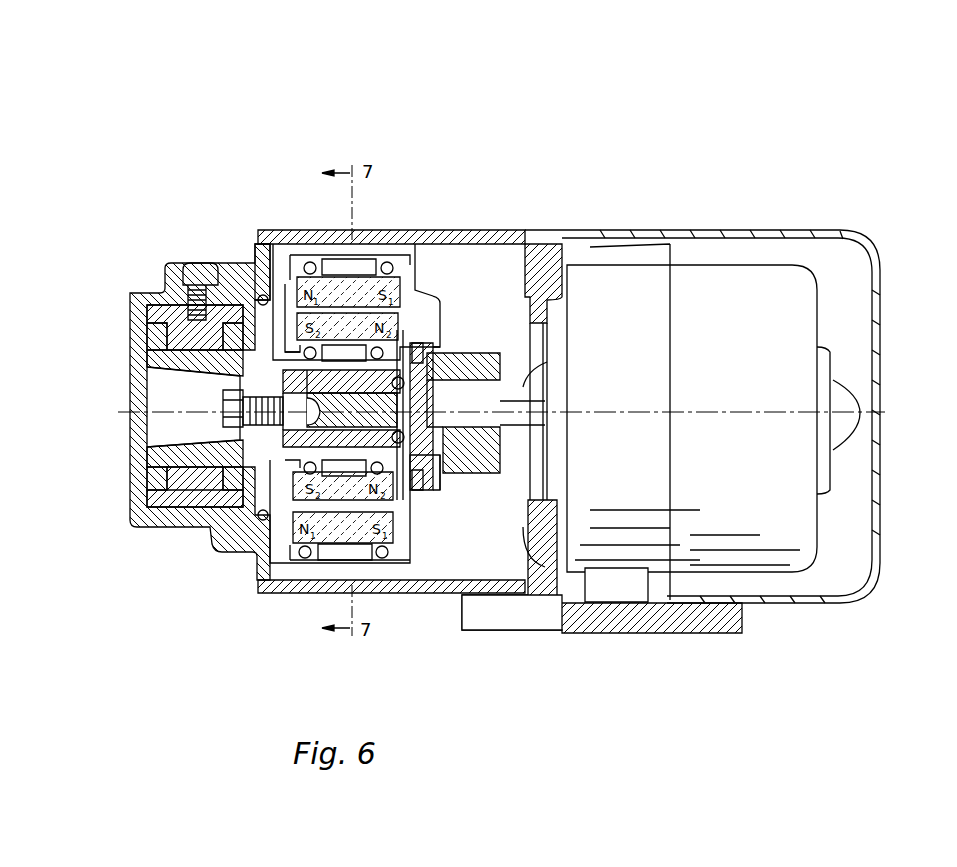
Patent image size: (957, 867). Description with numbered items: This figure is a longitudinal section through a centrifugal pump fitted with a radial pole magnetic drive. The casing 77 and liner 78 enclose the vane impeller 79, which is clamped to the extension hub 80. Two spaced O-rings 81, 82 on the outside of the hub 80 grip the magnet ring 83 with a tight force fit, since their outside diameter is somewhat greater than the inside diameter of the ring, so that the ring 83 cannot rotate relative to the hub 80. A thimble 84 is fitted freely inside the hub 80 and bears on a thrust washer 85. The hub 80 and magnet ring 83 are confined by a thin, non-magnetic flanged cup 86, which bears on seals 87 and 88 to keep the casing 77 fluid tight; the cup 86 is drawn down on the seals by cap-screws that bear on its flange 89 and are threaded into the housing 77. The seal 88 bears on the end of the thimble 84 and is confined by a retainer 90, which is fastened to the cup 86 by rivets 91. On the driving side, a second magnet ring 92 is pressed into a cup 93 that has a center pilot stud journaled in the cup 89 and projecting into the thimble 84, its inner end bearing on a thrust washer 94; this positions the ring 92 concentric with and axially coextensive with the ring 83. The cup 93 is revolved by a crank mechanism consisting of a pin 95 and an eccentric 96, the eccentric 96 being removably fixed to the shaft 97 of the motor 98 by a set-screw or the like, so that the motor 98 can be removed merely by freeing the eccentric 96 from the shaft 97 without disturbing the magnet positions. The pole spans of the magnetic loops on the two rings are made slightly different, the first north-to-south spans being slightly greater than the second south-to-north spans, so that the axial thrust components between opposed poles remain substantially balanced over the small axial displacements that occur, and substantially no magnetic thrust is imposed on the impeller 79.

The casing 77 is at (142, 293).
The liner 78 is at (160, 318).
The vane impeller 79 is at (160, 360).
The extension hub 80 is at (243, 422).
The O-ring 81 is at (292, 352).
The O-ring 82 is at (410, 353).
The magnet ring 83 is at (403, 323).
The thimble 84 is at (290, 390).
The thrust washer 85 is at (223, 410).
The flanged cup 86 is at (412, 472).
The seal 87 is at (262, 295).
The seal 88 is at (400, 440).
The flange 89 is at (262, 250).
The retainer 90 is at (408, 472).
The rivets 91 is at (490, 373).
The magnet ring 92 is at (352, 280).
The cup 93 is at (325, 256).
The thrust washer 94 is at (300, 465).
The pin 95 is at (535, 362).
The eccentric 96 is at (498, 455).
The shaft 97 is at (497, 418).
The motor 98 is at (787, 283).